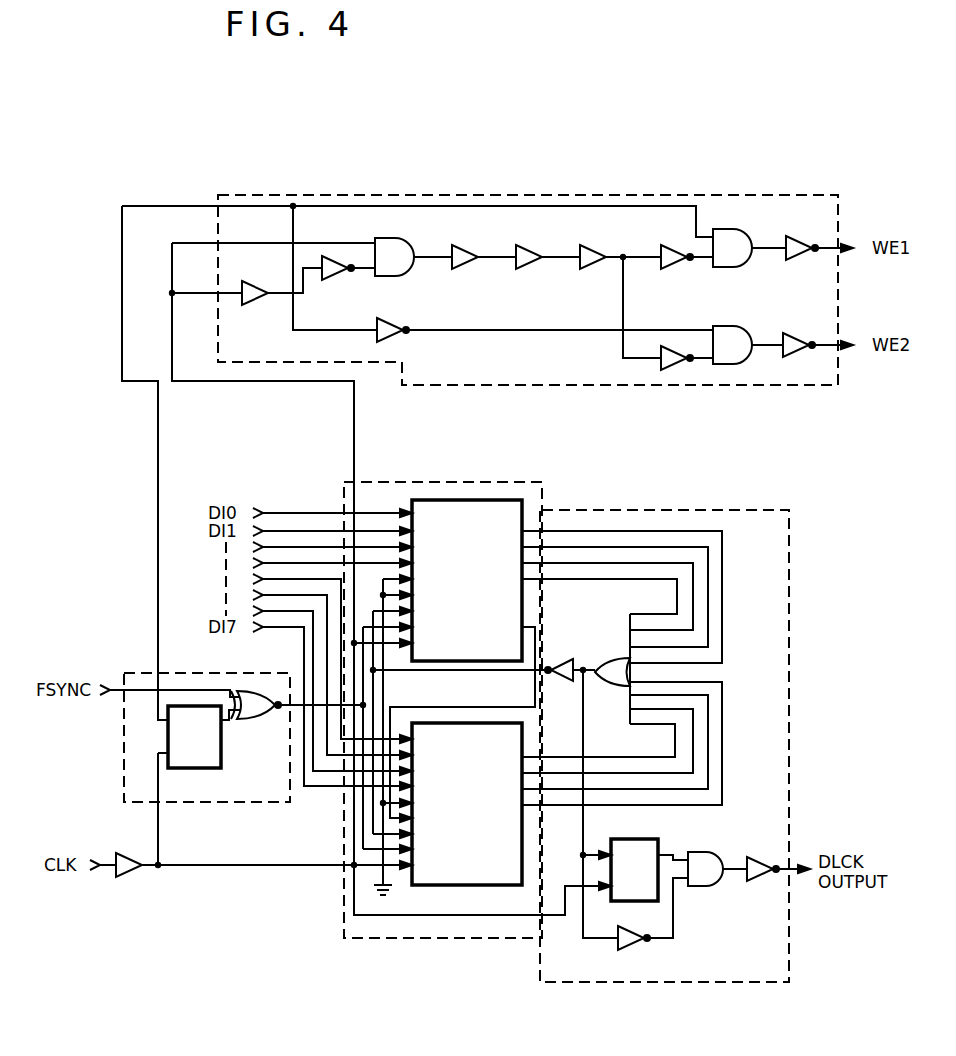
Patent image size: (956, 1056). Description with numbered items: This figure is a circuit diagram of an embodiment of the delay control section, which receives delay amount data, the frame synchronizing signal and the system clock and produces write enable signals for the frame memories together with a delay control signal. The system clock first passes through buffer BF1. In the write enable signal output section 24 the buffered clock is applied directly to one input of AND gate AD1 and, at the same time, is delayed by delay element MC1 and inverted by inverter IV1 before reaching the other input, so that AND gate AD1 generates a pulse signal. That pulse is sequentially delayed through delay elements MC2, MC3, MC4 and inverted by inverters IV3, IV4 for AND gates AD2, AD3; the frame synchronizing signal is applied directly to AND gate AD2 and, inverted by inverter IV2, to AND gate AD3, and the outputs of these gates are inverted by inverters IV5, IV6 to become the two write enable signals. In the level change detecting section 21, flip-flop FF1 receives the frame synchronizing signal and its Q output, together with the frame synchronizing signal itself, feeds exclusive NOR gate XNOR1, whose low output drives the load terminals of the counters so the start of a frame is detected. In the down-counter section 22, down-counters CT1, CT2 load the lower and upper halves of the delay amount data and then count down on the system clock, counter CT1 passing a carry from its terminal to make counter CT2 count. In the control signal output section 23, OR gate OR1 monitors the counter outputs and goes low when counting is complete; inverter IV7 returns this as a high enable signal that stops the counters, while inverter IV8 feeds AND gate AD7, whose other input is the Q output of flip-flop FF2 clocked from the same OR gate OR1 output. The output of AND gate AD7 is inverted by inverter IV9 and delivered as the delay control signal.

The level change detecting section 21 is at (186, 672).
The down-counter section 22 is at (400, 940).
The control signal output section 23 is at (560, 984).
The write enable signal output section 24 is at (513, 193).
The buffer BF1 is at (127, 876).
The flip-flop FF1 is at (188, 769).
The flip-flop FF2 is at (660, 846).
The exclusive NOR gate XNOR1 is at (258, 721).
The down-counter CT1 is at (460, 661).
The down-counter CT2 is at (460, 885).
The OR gate OR1 is at (608, 687).
The inverter IV1 is at (339, 276).
The inverter IV2 is at (396, 338).
The inverter IV3 is at (680, 267).
The inverter IV4 is at (680, 367).
The inverter IV5 is at (802, 258).
The inverter IV6 is at (799, 355).
The inverter IV7 is at (559, 682).
The inverter IV8 is at (632, 950).
The inverter IV9 is at (759, 857).
The delay element MC1 is at (263, 300).
The delay element MC2 is at (475, 247).
The delay element MC3 is at (539, 247).
The delay element MC4 is at (602, 247).
The AND gate AD1 is at (394, 246).
The AND gate AD2 is at (732, 238).
The AND gate AD3 is at (732, 335).
The AND gate AD7 is at (712, 887).